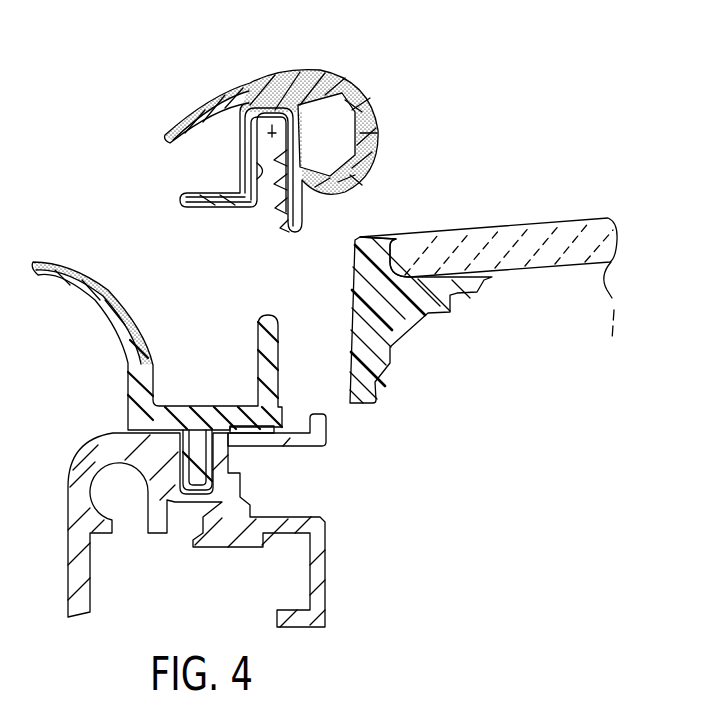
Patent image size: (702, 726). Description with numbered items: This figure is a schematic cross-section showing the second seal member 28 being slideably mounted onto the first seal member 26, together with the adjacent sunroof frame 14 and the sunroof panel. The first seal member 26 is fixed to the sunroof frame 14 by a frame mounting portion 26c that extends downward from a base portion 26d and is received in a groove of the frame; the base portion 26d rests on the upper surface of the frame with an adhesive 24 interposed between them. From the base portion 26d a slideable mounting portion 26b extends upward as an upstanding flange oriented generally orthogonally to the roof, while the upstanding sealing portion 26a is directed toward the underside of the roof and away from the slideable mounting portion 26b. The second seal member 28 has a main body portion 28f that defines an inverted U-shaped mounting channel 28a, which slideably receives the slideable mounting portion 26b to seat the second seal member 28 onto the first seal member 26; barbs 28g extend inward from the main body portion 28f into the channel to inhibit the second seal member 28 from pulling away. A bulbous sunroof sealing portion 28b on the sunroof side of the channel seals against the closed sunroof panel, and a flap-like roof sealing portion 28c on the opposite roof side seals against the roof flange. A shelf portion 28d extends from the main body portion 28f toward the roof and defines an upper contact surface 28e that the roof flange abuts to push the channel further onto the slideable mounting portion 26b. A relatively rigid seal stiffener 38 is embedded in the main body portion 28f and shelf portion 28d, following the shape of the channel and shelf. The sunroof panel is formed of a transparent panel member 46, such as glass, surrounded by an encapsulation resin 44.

The sunroof frame 14 is at (212, 556).
The adhesive 24 is at (283, 408).
The first seal member 26 is at (298, 339).
The sealing portion 26a is at (92, 300).
The slideable mounting portion 26b is at (272, 347).
The frame mounting portion 26c is at (212, 460).
The base portion 26d is at (247, 413).
The second seal member 28 is at (374, 190).
The U-shaped mounting channel 28a is at (272, 125).
The sunroof sealing portion 28b is at (361, 103).
The roof sealing portion 28c is at (202, 101).
The shelf portion 28d is at (207, 209).
The upper contact surface 28e is at (195, 193).
The main body portion 28f is at (252, 165).
The barbs 28g is at (280, 214).
The seal stiffener 38 is at (267, 278).
The encapsulation resin 44 is at (400, 330).
The sunroof transparent panel member 46 is at (503, 234).